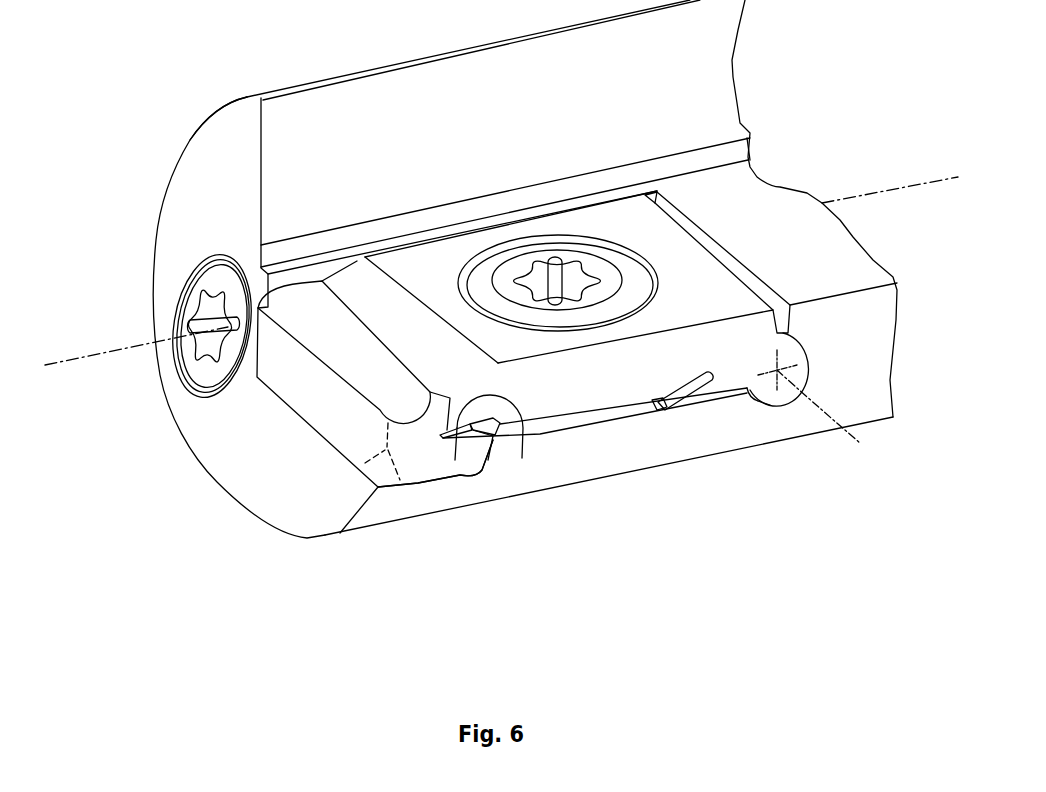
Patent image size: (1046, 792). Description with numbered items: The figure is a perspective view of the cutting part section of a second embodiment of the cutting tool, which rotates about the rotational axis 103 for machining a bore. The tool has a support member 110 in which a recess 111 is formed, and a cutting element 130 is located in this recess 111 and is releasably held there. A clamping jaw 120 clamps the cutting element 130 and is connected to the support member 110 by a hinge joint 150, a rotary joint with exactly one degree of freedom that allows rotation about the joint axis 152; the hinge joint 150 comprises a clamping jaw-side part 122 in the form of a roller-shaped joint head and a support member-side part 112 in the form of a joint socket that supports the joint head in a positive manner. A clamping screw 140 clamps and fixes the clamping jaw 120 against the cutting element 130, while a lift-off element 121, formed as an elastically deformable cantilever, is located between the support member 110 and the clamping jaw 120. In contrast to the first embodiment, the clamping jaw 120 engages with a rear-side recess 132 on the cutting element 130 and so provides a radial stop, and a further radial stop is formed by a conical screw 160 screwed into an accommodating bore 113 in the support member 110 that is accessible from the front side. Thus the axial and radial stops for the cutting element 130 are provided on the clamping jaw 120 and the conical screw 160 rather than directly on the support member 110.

The rotational axis 103 is at (887, 188).
The support member 110 is at (623, 457).
The recess 111 is at (467, 473).
The support member-side part 112 is at (782, 405).
The accommodating bore 113 is at (175, 258).
The clamping jaw 120 is at (630, 227).
The lift-off element 121 is at (682, 400).
The clamping jaw-side part 122 is at (763, 397).
The cutting element 130 is at (415, 470).
The rear-side recess 132 is at (522, 458).
The clamping screw 140 is at (537, 253).
The hinge joint 150 is at (812, 348).
The joint axis 152 is at (839, 415).
The conical screw 160 is at (198, 357).